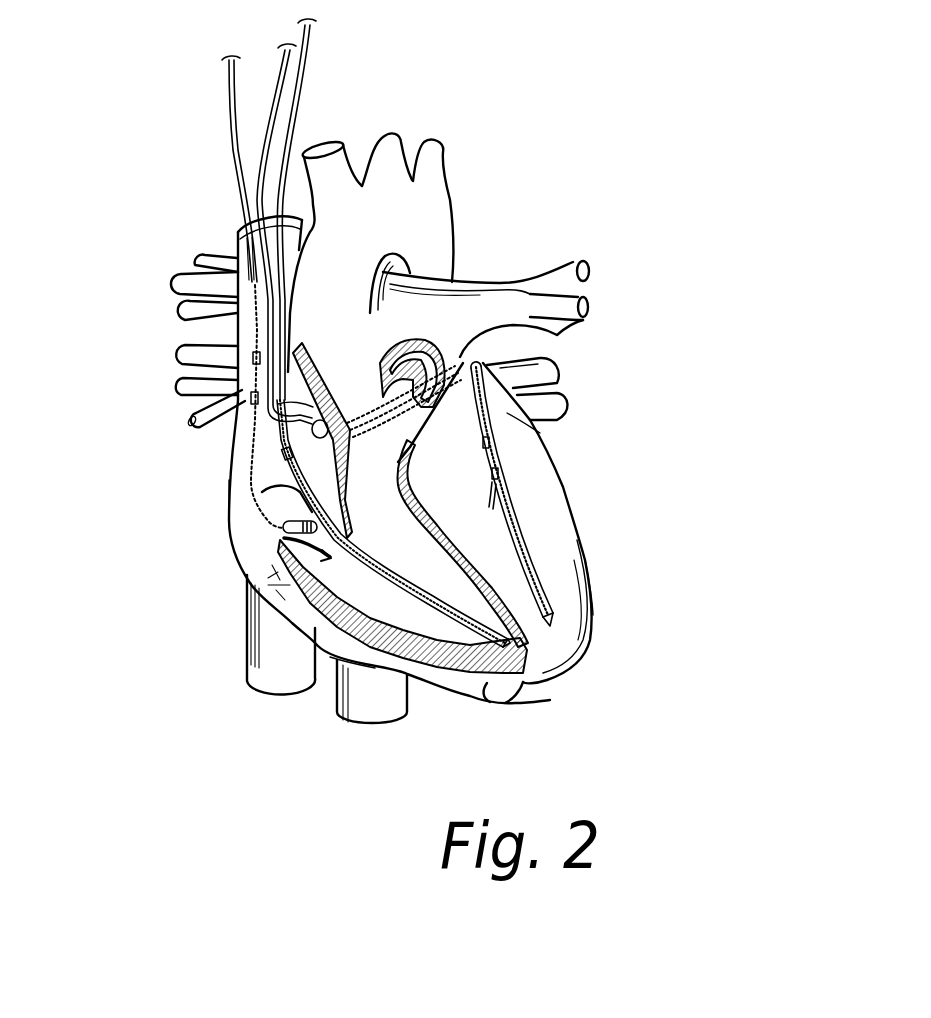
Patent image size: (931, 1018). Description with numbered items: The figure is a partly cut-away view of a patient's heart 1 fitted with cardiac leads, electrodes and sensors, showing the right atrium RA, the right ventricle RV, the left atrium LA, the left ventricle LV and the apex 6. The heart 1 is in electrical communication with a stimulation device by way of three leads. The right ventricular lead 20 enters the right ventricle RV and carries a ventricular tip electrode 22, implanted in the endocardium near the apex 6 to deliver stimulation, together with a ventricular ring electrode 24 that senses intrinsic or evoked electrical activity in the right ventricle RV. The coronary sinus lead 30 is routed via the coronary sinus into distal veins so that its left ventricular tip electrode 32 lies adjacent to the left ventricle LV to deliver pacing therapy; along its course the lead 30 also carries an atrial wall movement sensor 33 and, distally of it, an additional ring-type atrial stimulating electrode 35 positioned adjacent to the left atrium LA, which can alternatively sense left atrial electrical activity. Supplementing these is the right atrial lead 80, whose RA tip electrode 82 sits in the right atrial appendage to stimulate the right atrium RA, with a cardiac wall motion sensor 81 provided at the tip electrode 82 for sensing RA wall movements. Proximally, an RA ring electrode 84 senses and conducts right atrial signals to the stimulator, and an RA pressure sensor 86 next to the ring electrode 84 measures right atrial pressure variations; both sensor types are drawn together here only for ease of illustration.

The heart 1 is at (575, 166).
The apex 6 is at (550, 700).
The right ventricular lead 20 is at (277, 60).
The ventricular tip electrode 22 is at (488, 645).
The ventricular ring electrode 24 is at (478, 648).
The coronary sinus lead 30 is at (307, 53).
The left ventricular tip electrode 32 is at (553, 610).
The atrial wall movement sensor 33 is at (497, 442).
The additional atrial stimulating electrode 35 is at (503, 472).
The right atrial lead 80 is at (233, 138).
The cardiac wall motion sensor 81 is at (181, 331).
The RA tip electrode 82 is at (256, 358).
The RA ring electrode 84 is at (253, 392).
The RA pressure sensor 86 is at (171, 436).
The left atrium LA is at (510, 420).
The left ventricle LV is at (563, 570).
The right atrium RA is at (282, 533).
The right ventricle RV is at (367, 592).